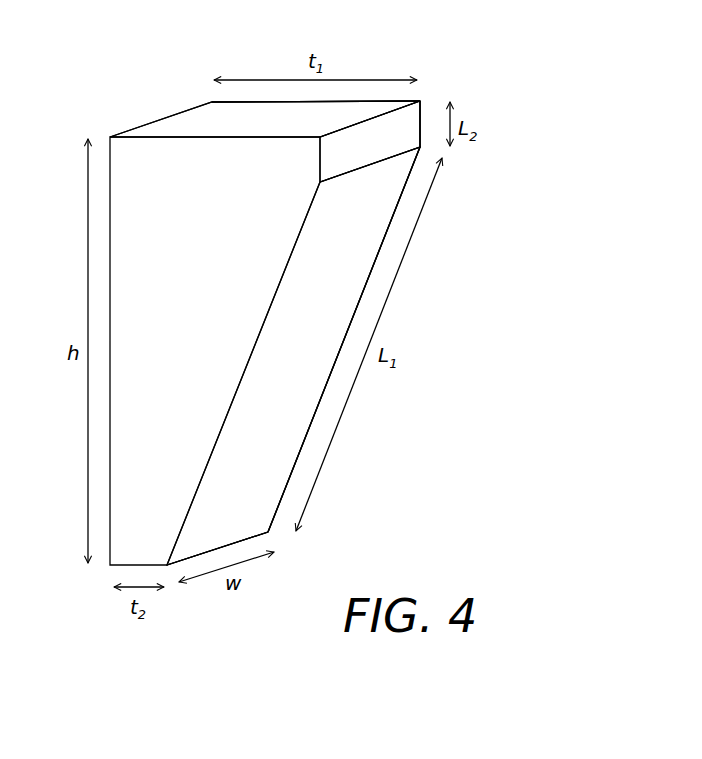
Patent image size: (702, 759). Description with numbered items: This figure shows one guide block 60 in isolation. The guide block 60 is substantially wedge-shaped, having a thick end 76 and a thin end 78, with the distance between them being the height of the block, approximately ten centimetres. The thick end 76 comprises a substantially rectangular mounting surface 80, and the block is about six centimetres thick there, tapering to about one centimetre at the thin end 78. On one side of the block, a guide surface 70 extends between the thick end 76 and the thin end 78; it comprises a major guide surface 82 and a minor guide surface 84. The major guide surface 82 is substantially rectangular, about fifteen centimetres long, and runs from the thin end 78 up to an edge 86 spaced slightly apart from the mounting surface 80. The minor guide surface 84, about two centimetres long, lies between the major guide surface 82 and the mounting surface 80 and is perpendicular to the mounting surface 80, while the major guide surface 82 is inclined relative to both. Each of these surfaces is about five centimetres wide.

The guide block 60 is at (482, 253).
The guide surface 70 is at (365, 427).
The thick end 76 is at (385, 62).
The thin end 78 is at (205, 593).
The mounting surface 80 is at (192, 122).
The major guide surface 82 is at (287, 463).
The minor guide surface 84 is at (358, 158).
The edge 86 is at (420, 147).